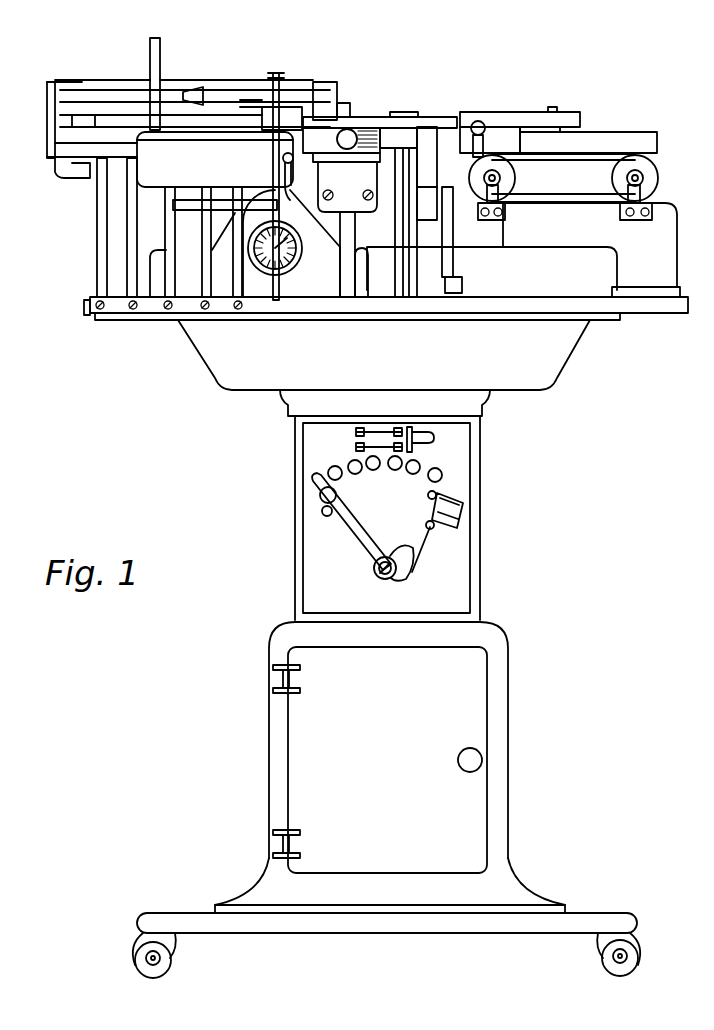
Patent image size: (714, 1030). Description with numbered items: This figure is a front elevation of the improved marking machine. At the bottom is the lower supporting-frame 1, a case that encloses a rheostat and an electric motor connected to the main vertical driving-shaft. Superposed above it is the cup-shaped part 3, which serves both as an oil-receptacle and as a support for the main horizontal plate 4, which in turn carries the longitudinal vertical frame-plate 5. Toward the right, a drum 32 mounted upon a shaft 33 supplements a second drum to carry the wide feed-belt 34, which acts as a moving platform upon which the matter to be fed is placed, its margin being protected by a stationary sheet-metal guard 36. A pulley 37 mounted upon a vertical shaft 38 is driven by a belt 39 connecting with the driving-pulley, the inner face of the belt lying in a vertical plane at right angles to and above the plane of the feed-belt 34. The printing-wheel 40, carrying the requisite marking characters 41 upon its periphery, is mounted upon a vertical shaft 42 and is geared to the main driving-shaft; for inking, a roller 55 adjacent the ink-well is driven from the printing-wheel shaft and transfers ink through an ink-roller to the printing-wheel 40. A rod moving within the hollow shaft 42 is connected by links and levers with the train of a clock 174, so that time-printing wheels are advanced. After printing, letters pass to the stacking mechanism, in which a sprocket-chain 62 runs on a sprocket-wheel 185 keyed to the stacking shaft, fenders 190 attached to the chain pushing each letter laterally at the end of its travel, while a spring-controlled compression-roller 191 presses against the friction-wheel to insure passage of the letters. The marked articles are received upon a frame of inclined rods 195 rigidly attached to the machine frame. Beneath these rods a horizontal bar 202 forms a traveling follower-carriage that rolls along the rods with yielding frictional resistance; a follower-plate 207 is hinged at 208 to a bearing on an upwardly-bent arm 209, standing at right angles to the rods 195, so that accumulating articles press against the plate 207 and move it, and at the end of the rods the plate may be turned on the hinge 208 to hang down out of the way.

The lower supporting-frame 1 is at (386, 684).
The cup-shaped part 3 is at (548, 365).
The main horizontal plate 4 is at (645, 310).
The longitudinal vertical frame-plate 5 is at (415, 243).
The drum 32 is at (657, 185).
The shaft 33 is at (642, 177).
The wide feed-belt 34 is at (575, 198).
The stationary sheet-metal guard 36 is at (623, 137).
The pulley 37 is at (478, 187).
The vertical shaft 38 is at (552, 107).
The belt 39 is at (578, 123).
The printing-wheel 40 is at (355, 130).
The marking characters 41 is at (373, 135).
The vertical shaft 42 is at (355, 243).
The roller 55 is at (425, 133).
The sprocket-chain 62 is at (215, 95).
The clock 174 is at (289, 262).
The sprocket-wheel 185 is at (320, 113).
The fender 190 is at (195, 87).
The compression-roller 191 is at (283, 113).
The inclined rods 195 is at (130, 222).
The horizontal bar 202 is at (217, 203).
The follower-plate 207 is at (215, 153).
The hinge 208 is at (272, 152).
The upwardly-bent arm 209 is at (291, 187).